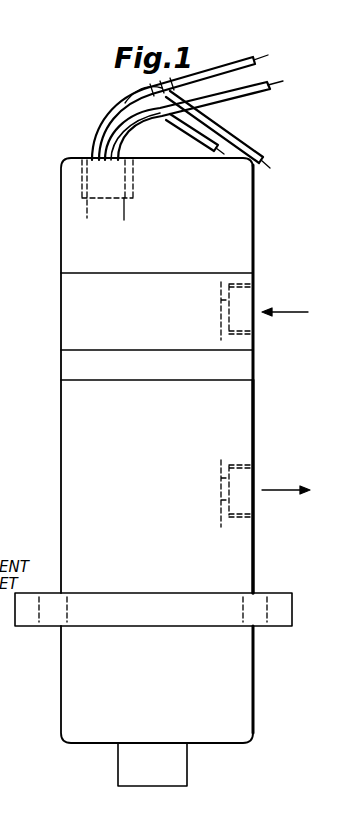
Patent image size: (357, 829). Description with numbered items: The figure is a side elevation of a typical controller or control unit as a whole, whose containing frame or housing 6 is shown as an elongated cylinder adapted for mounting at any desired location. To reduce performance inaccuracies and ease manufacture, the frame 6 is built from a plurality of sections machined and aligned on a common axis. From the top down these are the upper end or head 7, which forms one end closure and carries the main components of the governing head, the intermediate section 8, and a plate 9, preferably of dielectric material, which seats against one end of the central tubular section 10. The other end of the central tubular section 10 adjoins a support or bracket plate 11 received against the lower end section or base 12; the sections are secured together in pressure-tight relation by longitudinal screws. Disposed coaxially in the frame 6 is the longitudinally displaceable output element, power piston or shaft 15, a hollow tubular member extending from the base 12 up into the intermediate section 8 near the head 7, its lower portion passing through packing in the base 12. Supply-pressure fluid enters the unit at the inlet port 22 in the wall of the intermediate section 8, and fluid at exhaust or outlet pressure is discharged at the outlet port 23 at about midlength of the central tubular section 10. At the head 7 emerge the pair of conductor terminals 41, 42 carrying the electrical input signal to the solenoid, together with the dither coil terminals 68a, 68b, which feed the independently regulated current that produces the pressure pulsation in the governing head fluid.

The containing frame or housing 6 is at (53, 248).
The upper end or head 7 is at (244, 210).
The intermediate section 8 is at (240, 343).
The plate 9 is at (234, 366).
The central tubular section 10 is at (237, 422).
The support or bracket plate 11 is at (257, 604).
The lower end section or base 12 is at (233, 680).
The output element, power piston or shaft 15 is at (115, 767).
The inlet port 22 is at (238, 305).
The outlet port 23 is at (238, 484).
The conductor terminal 41 is at (225, 65).
The conductor terminal 42 is at (247, 90).
The dither coil terminal 68a is at (185, 125).
The dither coil terminal 68b is at (232, 130).